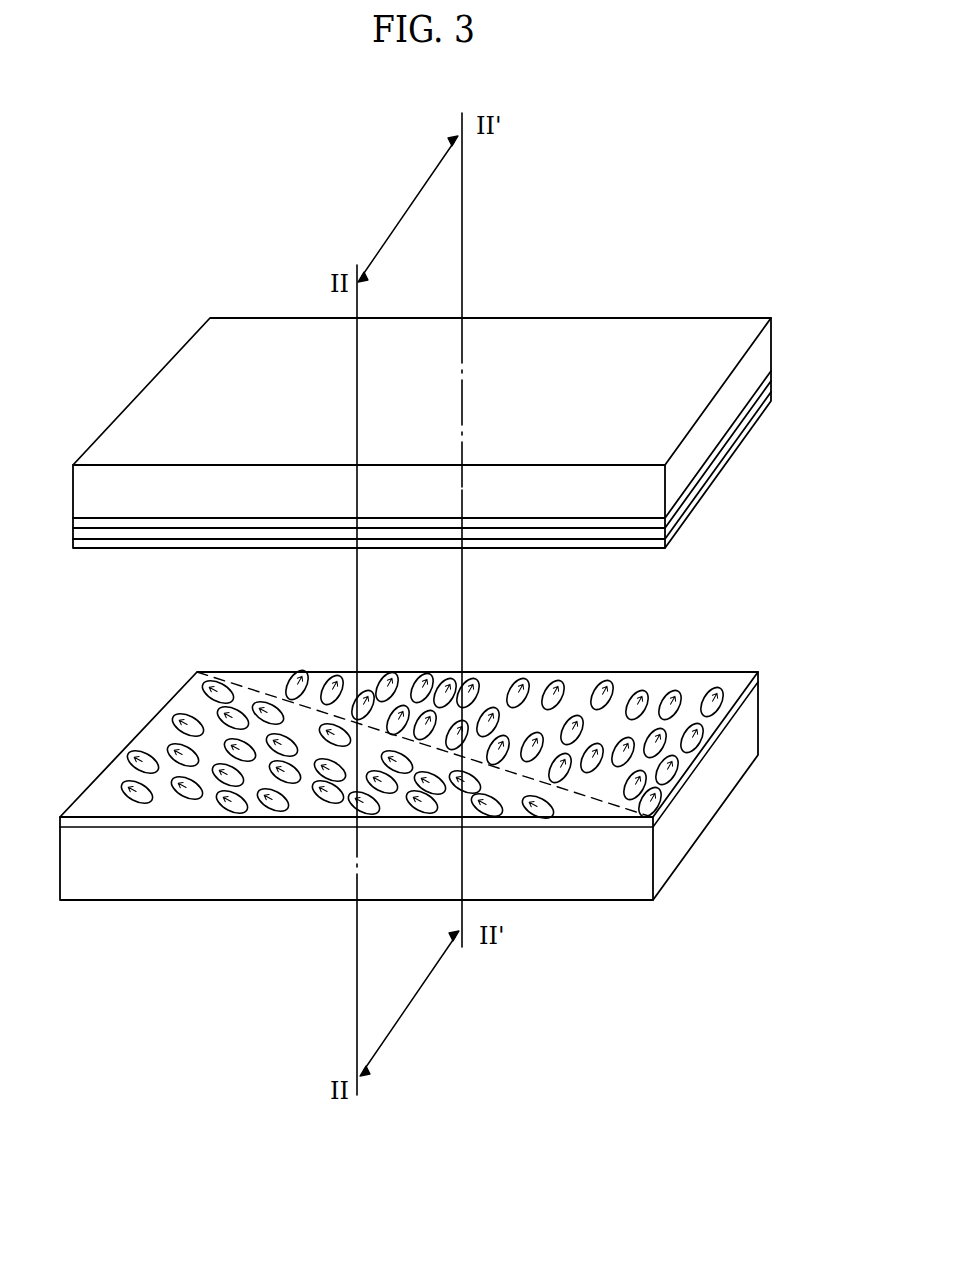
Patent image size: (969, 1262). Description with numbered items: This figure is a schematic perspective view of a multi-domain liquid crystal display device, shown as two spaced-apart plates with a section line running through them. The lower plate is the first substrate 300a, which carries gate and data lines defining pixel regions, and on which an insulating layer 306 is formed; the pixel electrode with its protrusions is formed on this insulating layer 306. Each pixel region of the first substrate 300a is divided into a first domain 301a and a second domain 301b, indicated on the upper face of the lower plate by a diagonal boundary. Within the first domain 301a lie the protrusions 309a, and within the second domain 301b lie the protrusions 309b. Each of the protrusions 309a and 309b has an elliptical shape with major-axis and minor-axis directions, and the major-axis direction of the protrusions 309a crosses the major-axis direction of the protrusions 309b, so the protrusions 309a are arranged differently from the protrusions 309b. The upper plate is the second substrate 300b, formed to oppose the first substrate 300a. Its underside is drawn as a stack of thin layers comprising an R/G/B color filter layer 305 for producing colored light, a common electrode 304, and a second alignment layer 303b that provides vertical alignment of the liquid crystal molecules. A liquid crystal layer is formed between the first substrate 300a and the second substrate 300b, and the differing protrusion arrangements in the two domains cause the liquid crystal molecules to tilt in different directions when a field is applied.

The first substrate 300a is at (718, 788).
The second substrate 300b is at (765, 345).
The first domain 301a is at (192, 700).
The second domain 301b is at (247, 675).
The second alignment layer 303b is at (771, 405).
The common electrode 304 is at (771, 388).
The R/G/B color filter layer 305 is at (771, 373).
The insulating layer 306 is at (740, 703).
The protrusions of the first domain 309a is at (137, 757).
The protrusions of the second domain 309b is at (555, 690).